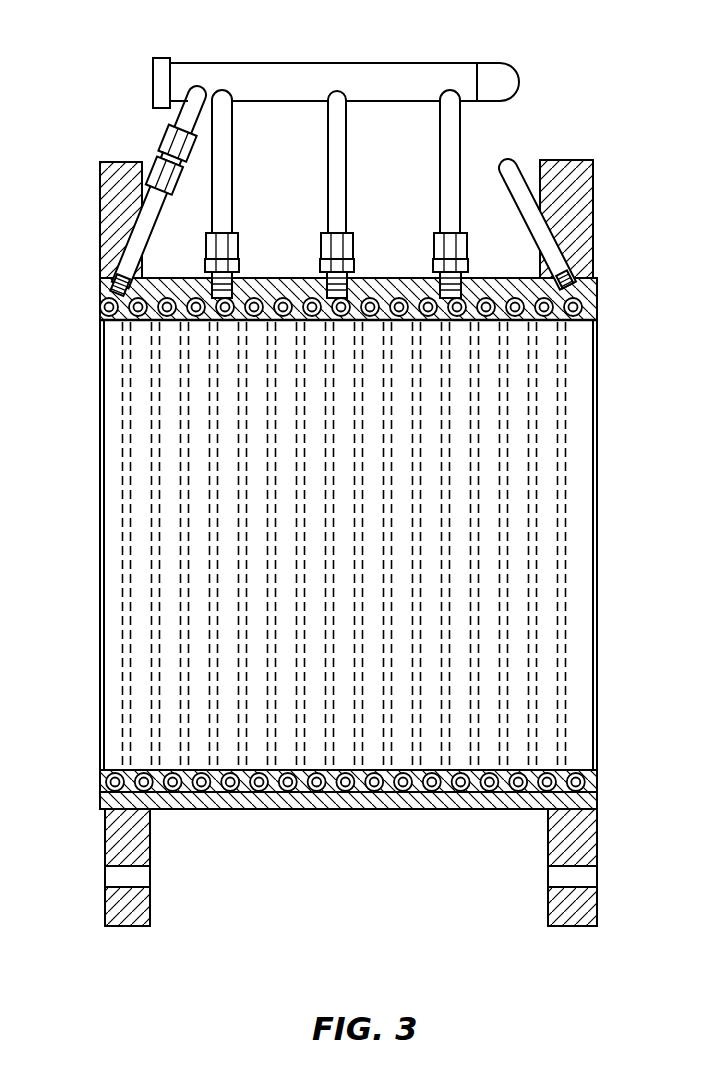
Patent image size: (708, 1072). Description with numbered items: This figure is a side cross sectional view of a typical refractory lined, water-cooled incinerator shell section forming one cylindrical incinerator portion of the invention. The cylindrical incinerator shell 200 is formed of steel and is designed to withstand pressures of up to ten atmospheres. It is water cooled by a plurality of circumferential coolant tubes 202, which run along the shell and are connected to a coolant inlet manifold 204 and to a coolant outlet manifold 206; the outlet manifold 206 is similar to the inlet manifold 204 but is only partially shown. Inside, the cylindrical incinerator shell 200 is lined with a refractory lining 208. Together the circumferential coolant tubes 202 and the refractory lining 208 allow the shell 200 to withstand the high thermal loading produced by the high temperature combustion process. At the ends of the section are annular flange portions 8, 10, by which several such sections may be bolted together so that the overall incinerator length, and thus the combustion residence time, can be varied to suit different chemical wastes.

The annular flange portion 8 is at (600, 917).
The annular flange portion 10 is at (105, 927).
The cylindrical incinerator shell 200 is at (382, 810).
The circumferential coolant tubes 202 is at (122, 772).
The coolant inlet manifold 204 is at (300, 62).
The coolant outlet manifold 206 is at (517, 166).
The refractory lining 208 is at (180, 320).